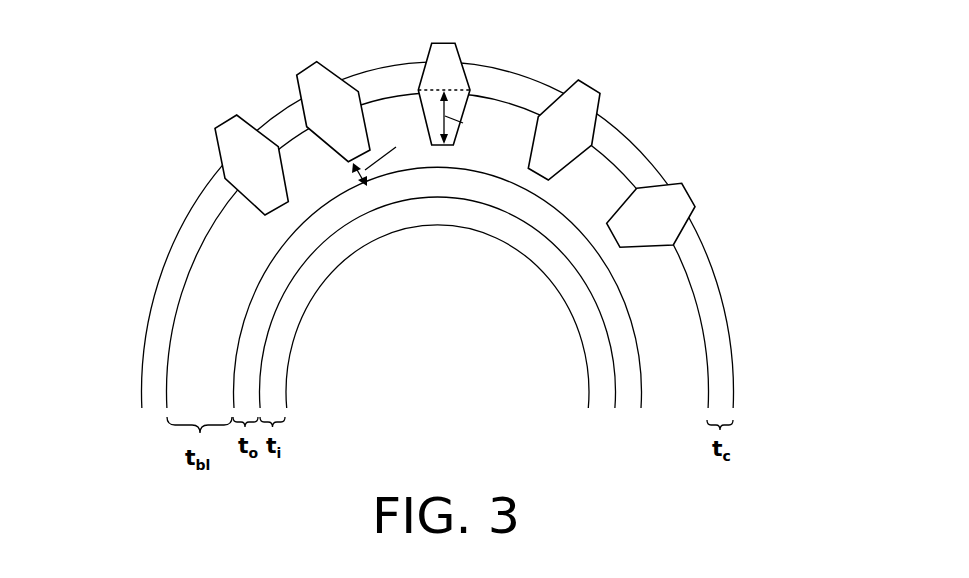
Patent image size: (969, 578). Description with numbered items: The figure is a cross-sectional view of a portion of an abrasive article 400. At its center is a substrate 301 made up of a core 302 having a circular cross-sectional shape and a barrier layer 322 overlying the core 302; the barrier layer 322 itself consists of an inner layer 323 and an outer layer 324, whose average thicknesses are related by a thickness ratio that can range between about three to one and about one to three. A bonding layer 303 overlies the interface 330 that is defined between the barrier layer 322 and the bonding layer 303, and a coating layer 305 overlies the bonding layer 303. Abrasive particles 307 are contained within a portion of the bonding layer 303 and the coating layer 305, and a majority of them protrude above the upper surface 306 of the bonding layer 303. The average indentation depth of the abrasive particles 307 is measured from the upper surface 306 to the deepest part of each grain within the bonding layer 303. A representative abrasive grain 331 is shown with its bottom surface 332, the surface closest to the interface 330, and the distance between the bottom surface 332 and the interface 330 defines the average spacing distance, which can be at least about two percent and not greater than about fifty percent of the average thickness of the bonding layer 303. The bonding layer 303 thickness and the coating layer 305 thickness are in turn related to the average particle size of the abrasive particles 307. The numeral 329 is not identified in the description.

The substrate 301 is at (437, 282).
The core 302 is at (462, 362).
The bonding layer 303 is at (693, 380).
The coating layer 305 is at (720, 333).
The upper surface 306 is at (683, 253).
The abrasive particles 307 is at (673, 186).
The barrier layer 322 is at (452, 362).
The inner layer 323 is at (602, 380).
The outer layer 324 is at (628, 393).
The outer ring inner surface 329 is at (497, 90).
The interface 330 is at (630, 315).
The abrasive grain 331 is at (312, 62).
The bottom surface 332 is at (354, 172).
The abrasive article 400 is at (129, 59).